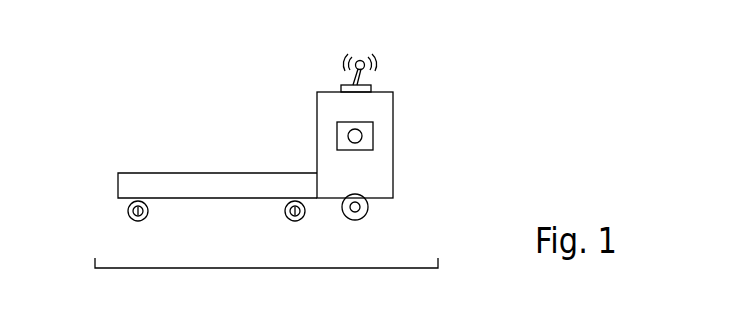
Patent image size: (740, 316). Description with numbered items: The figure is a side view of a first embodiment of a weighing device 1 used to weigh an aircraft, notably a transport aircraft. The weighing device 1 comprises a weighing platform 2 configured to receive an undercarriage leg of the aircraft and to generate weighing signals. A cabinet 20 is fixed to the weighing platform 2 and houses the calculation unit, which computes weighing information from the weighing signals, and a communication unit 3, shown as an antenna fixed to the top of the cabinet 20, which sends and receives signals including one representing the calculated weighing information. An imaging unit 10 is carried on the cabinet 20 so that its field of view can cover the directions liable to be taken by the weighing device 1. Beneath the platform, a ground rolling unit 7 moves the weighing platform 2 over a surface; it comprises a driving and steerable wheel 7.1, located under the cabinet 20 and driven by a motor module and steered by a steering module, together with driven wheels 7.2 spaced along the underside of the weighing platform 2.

The weighing device 1 is at (186, 71).
The weighing platform 2 is at (167, 180).
The communication unit 3 is at (366, 62).
The cabinet 20 is at (383, 102).
The imaging unit 10 is at (373, 133).
The ground rolling unit 7 is at (266, 268).
The driving and steerable wheel 7.1 is at (366, 215).
The driven wheel 7.2 is at (147, 215).